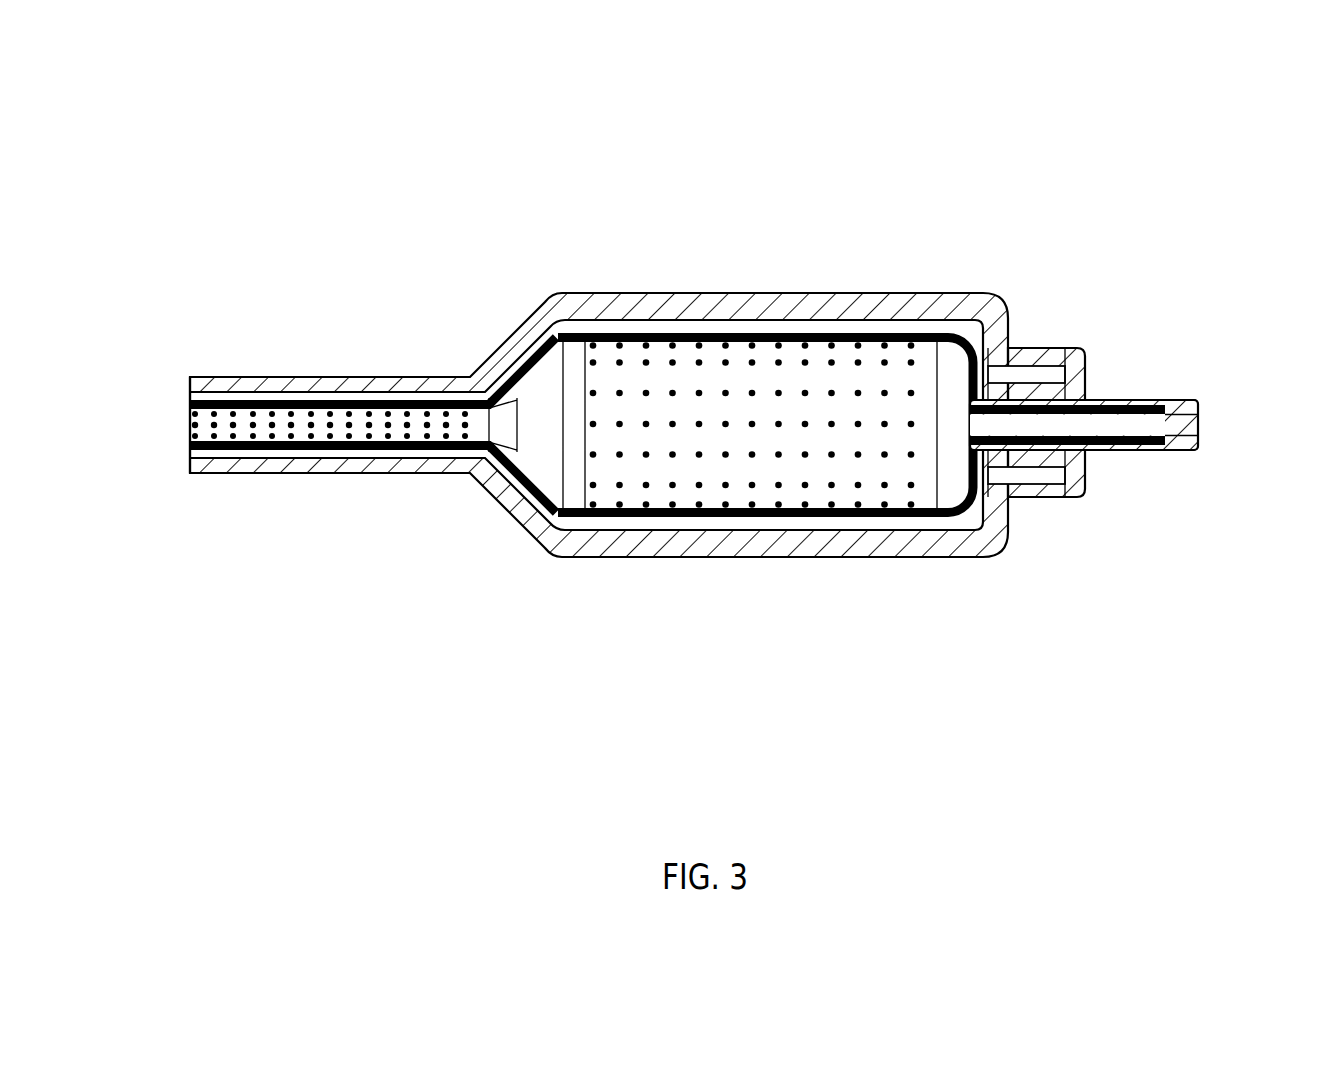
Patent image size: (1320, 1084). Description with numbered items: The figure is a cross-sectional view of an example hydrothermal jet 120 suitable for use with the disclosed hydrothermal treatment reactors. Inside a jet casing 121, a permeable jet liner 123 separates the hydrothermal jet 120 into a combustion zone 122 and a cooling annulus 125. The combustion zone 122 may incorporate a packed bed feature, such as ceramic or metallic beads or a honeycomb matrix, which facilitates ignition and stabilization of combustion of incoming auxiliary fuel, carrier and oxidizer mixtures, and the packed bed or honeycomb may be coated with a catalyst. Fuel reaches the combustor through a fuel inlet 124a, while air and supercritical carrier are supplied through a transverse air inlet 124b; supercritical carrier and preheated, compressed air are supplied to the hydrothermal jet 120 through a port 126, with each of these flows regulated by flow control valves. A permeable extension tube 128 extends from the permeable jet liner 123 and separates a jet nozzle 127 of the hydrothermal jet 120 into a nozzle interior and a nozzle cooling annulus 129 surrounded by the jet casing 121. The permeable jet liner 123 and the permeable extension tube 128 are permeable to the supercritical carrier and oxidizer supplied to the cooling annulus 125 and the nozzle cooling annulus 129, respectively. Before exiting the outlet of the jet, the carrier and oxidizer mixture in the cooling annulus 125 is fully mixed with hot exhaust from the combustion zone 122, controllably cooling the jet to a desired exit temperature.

The hydrothermal jet 120 is at (240, 183).
The jet casing 121 is at (930, 558).
The combustion zone 122 is at (784, 378).
The permeable jet liner 123 is at (743, 340).
The fuel inlet 124a is at (1193, 426).
The transverse air inlet 124b is at (1150, 400).
The cooling annulus 125 is at (663, 522).
The port 126 is at (1050, 348).
The jet nozzle 127 is at (372, 560).
The permeable extension tube 128 is at (278, 405).
The nozzle cooling annulus 129 is at (290, 452).